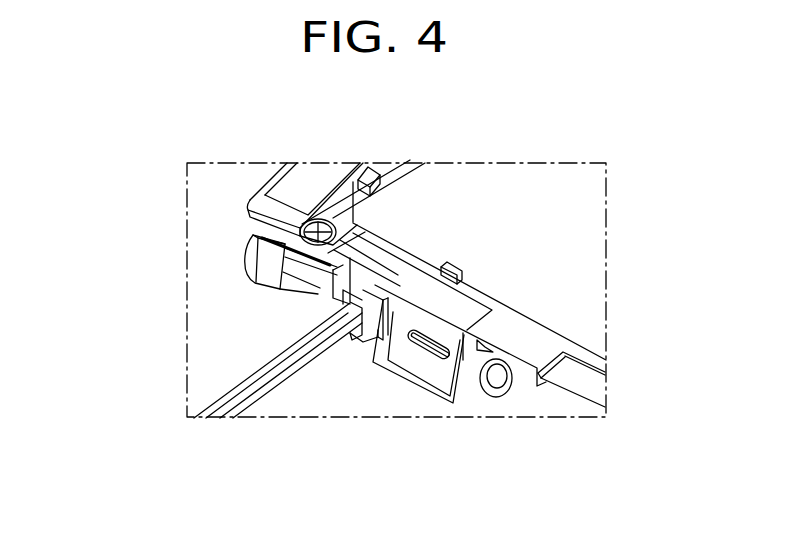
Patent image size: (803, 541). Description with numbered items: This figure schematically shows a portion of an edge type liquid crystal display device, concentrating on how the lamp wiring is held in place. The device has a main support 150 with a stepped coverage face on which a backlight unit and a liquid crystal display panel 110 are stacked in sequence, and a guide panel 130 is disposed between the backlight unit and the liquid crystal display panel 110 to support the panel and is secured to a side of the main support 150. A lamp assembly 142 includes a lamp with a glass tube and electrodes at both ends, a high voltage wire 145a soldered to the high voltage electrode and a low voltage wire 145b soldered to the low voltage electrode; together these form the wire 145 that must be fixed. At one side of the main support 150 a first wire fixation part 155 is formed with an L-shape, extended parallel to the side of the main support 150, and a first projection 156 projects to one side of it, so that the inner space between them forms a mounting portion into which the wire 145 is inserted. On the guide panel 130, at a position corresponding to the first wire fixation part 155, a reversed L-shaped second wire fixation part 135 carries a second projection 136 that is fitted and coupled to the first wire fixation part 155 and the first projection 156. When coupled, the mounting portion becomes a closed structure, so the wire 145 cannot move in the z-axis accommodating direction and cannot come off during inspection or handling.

The liquid crystal display panel 110 is at (568, 288).
The guide panel 130 is at (262, 202).
The lamp assembly 142 is at (263, 265).
The second projection 136 is at (366, 290).
The first projection 156 is at (357, 290).
The first wire fixation part 155 is at (337, 352).
The second wire fixation part 135 is at (367, 342).
The main support 150 is at (514, 405).
The wire 145 is at (207, 374).
The high voltage wire 145a is at (213, 398).
The low voltage wire 145b is at (213, 420).